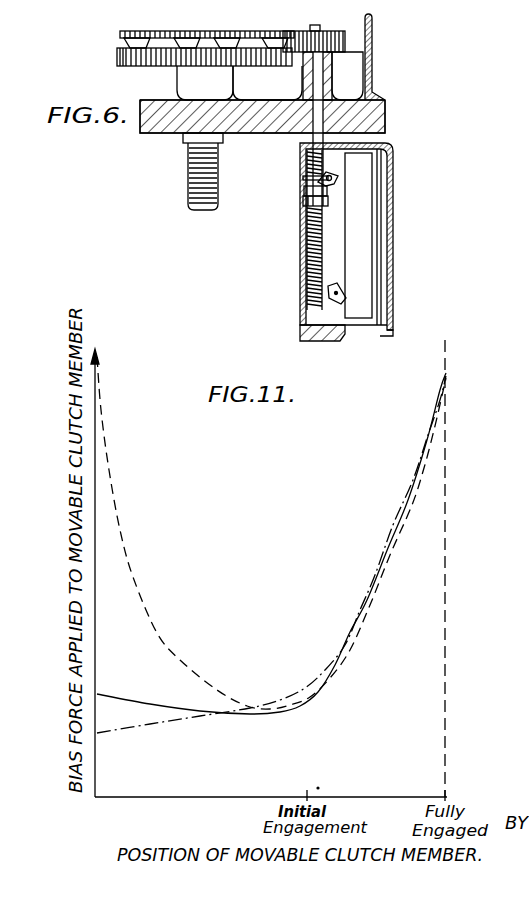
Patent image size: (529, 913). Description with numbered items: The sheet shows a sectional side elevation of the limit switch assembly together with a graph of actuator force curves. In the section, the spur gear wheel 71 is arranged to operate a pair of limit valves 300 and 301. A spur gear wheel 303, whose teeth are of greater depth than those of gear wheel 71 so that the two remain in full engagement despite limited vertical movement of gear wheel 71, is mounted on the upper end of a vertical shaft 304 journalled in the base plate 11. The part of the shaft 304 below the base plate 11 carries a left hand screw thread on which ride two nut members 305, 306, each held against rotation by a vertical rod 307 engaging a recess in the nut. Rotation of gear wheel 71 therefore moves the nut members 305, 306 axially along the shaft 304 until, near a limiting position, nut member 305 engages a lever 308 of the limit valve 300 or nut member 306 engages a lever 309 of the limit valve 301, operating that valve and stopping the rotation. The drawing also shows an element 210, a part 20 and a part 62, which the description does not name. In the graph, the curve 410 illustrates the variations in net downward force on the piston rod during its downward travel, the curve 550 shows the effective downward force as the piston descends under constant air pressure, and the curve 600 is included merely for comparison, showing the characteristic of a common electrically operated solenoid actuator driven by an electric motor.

In FIG. 6, the base plate 11 is at (373, 118).
In FIG. 6, the bolt 20 is at (193, 180).
In FIG. 6, the gear 62 is at (130, 57).
In FIG. 6, the spur gear wheel 71 is at (122, 33).
In FIG. 6, the post 210 is at (373, 24).
In FIG. 6, the limit valve 300 is at (362, 158).
In FIG. 6, the limit valve 301 is at (365, 317).
In FIG. 6, the spur gear wheel 303 is at (347, 38).
In FIG. 6, the vertical shaft 304 is at (315, 79).
In FIG. 6, the nut member 305 is at (320, 180).
In FIG. 6, the nut member 306 is at (328, 198).
In FIG. 6, the vertical rod 307 is at (307, 238).
In FIG. 6, the lever 308 is at (308, 188).
In FIG. 6, the lever 309 is at (346, 303).
In FIG. 11, the curve 410 is at (128, 700).
In FIG. 11, the curve 550 is at (133, 575).
In FIG. 11, the curve 600 is at (150, 731).